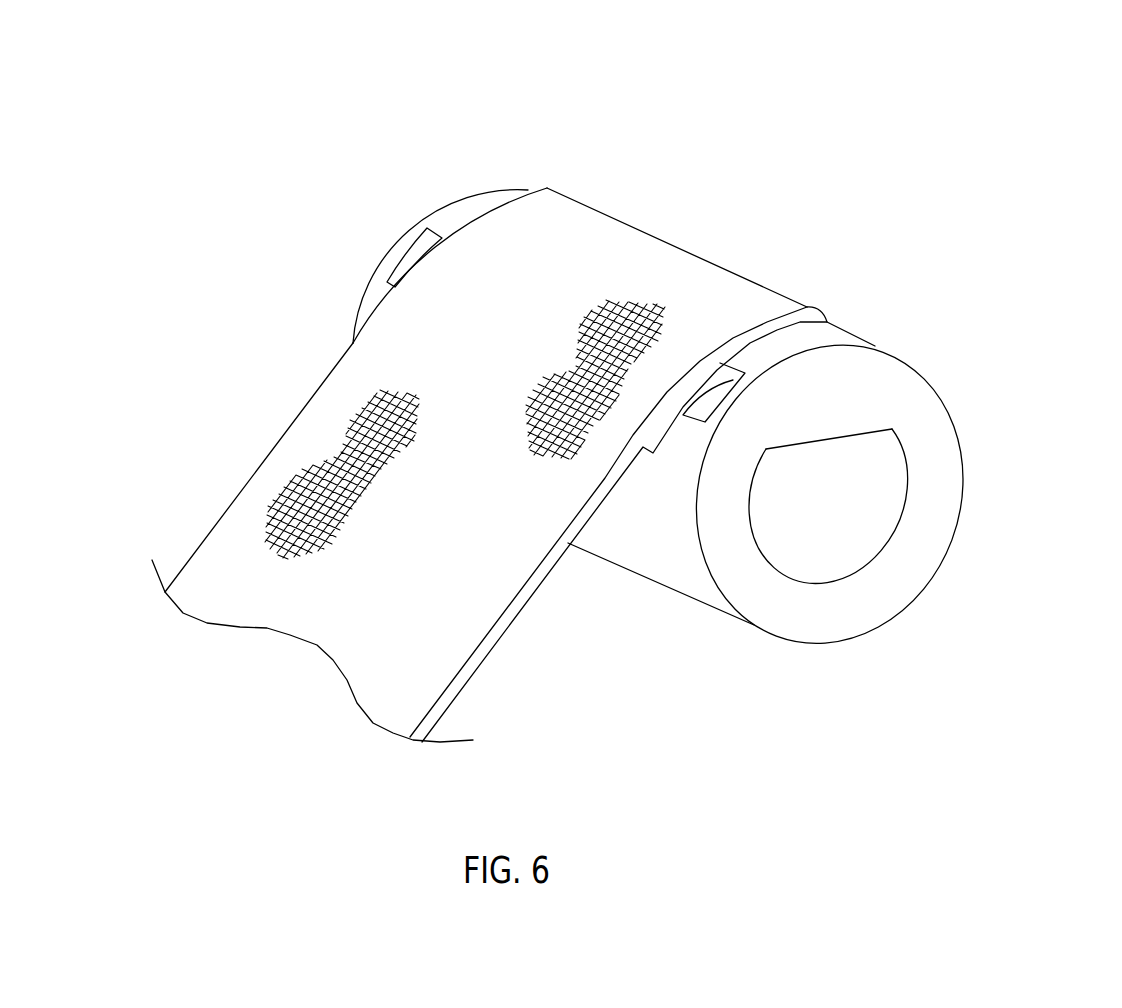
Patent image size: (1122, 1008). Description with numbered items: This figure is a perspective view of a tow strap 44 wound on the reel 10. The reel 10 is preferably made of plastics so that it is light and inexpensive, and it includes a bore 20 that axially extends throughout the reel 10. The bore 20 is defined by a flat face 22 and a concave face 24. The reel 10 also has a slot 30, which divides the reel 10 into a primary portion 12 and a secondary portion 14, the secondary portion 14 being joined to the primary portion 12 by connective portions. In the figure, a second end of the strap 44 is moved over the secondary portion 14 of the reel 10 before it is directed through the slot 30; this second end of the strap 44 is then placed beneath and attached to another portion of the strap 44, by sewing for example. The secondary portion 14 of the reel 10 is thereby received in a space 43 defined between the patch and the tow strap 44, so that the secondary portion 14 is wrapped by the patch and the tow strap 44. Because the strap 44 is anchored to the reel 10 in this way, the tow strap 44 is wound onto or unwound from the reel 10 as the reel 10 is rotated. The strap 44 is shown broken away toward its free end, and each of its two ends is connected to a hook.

The reel 10 is at (537, 165).
The primary portion 12 is at (650, 558).
The secondary portion 14 is at (808, 333).
The bore 20 is at (1080, 513).
The flat face 22 is at (830, 440).
The concave face 24 is at (850, 550).
The slot 30 is at (412, 259).
The space 43 is at (720, 363).
The tow strap 44 is at (373, 673).